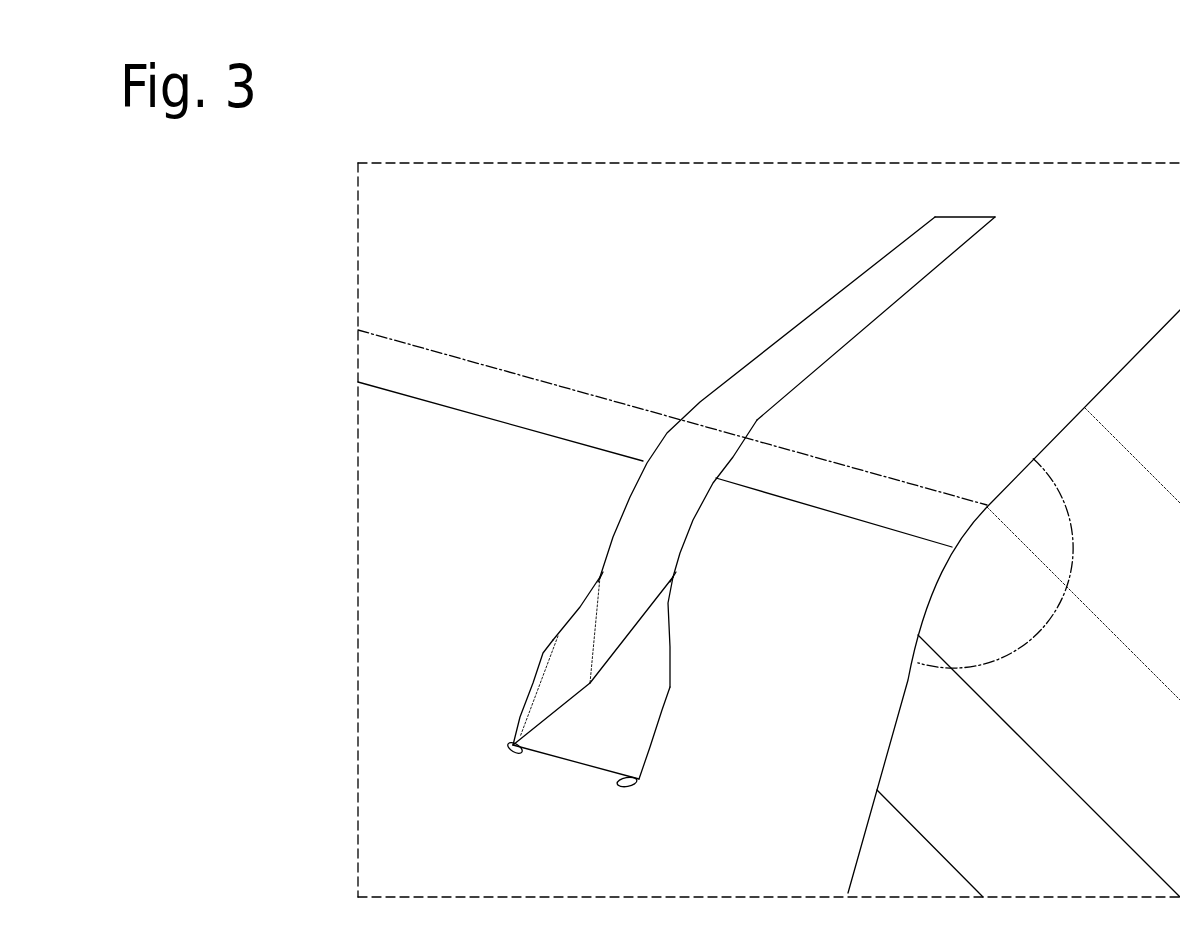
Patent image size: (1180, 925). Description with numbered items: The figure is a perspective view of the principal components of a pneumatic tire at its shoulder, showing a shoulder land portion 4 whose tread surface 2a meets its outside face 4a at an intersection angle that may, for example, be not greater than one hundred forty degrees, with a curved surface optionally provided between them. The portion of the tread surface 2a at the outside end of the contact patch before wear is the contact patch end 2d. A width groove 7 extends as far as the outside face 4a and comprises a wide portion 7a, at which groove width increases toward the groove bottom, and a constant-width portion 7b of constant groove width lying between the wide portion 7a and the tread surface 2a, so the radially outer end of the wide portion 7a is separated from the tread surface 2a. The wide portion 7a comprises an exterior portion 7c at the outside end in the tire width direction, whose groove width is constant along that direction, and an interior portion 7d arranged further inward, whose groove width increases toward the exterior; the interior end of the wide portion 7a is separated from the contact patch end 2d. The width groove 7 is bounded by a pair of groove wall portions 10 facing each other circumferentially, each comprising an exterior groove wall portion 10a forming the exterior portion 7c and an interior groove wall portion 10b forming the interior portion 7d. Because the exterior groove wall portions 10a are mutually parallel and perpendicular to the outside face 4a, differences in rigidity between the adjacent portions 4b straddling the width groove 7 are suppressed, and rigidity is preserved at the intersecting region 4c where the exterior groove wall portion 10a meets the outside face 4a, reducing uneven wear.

The tread surface 2a is at (1138, 200).
The contact patch end 2d is at (520, 378).
The shoulder land portion 4 is at (603, 190).
The outside face 4a is at (374, 504).
The adjacent portion 4b is at (616, 553).
The intersecting region 4c is at (513, 750).
The width groove 7 is at (690, 403).
The wide portion 7a is at (680, 695).
The constant-width portion 7b is at (690, 528).
The exterior portion 7c is at (519, 714).
The interior portion 7d is at (560, 630).
The groove wall portion 10 is at (645, 512).
The exterior groove wall portion 10a is at (518, 748).
The interior groove wall portion 10b is at (553, 692).